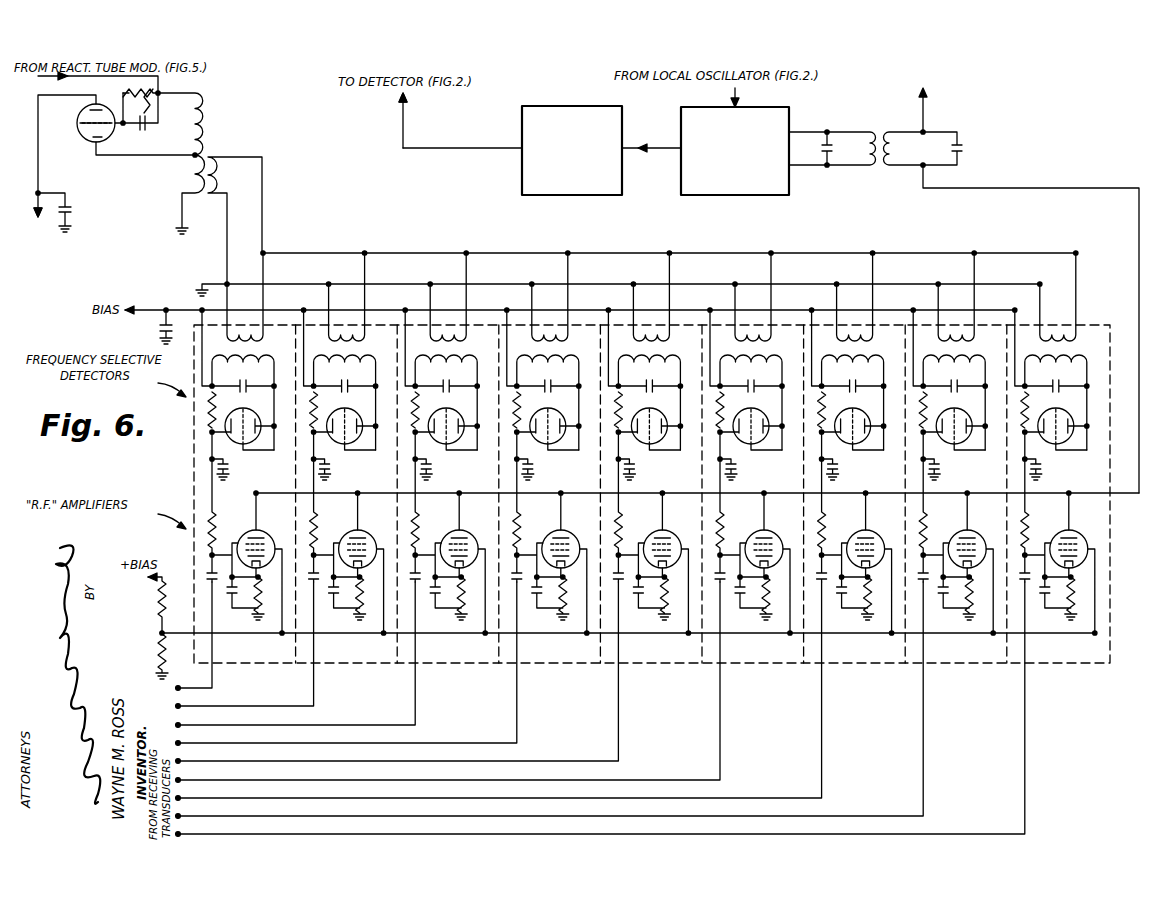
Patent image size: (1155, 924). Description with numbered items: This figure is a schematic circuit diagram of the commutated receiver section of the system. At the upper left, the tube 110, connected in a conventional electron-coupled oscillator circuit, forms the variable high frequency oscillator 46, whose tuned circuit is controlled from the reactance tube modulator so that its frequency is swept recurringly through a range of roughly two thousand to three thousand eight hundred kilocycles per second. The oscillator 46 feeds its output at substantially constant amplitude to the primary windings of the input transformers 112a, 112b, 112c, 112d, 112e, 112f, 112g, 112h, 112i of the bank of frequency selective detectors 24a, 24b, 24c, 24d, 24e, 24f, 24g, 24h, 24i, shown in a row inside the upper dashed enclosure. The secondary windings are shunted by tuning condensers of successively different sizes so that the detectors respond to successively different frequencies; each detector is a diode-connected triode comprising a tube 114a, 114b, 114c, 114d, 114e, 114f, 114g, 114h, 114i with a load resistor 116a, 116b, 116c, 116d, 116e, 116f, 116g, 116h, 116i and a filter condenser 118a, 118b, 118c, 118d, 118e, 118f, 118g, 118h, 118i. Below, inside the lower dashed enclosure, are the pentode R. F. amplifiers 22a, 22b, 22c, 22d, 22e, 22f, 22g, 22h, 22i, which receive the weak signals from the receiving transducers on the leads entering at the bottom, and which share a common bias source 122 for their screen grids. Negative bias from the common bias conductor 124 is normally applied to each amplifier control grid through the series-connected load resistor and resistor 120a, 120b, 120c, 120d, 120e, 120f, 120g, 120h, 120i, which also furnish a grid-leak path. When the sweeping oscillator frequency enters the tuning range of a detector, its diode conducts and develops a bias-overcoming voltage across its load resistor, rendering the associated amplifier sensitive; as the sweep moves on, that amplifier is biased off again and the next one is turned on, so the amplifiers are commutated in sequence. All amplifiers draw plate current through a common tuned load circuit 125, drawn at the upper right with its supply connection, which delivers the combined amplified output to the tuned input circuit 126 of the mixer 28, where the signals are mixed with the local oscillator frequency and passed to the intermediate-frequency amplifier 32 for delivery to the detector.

The tube 110 is at (80, 141).
The variable high frequency oscillator 46 is at (145, 186).
The intermediate-frequency amplifier 32 is at (572, 150).
The mixer 28 is at (735, 151).
The tuned input circuit 126 is at (849, 136).
The coupling coil 125 is at (935, 139).
The common bias conductor 124 is at (150, 306).
The common bias source 122 is at (186, 608).
The input transformer 112a is at (268, 340).
The input transformer 112b is at (357, 350).
The input transformer 112c is at (459, 350).
The input transformer 112d is at (562, 350).
The input transformer 112e is at (662, 350).
The input transformer 112f is at (764, 350).
The input transformer 112g is at (865, 350).
The input transformer 112h is at (967, 350).
The input transformer 112i is at (1067, 350).
The load resistor 116a is at (214, 402).
The load resistor 116b is at (344, 396).
The load resistor 116c is at (445, 396).
The load resistor 116d is at (547, 396).
The load resistor 116e is at (648, 396).
The load resistor 116f is at (750, 396).
The load resistor 116g is at (852, 396).
The load resistor 116h is at (953, 396).
The load resistor 116i is at (1055, 396).
The tube 114a is at (244, 411).
The tube 114b is at (345, 425).
The tube 114c is at (447, 425).
The tube 114d is at (550, 425).
The tube 114e is at (650, 425).
The tube 114f is at (752, 425).
The tube 114g is at (853, 425).
The tube 114h is at (955, 425).
The tube 114i is at (1056, 425).
The frequency selective detector 24a is at (236, 450).
The frequency selective detector 24b is at (358, 458).
The frequency selective detector 24c is at (458, 458).
The frequency selective detector 24d is at (561, 458).
The frequency selective detector 24e is at (662, 458).
The frequency selective detector 24f is at (763, 458).
The frequency selective detector 24g is at (866, 458).
The frequency selective detector 24h is at (967, 458).
The frequency selective detector 24i is at (1068, 458).
The filter condenser 118a is at (231, 477).
The filter condenser 118b is at (341, 474).
The filter condenser 118c is at (443, 474).
The filter condenser 118d is at (546, 474).
The filter condenser 118e is at (646, 474).
The filter condenser 118f is at (748, 474).
The filter condenser 118g is at (849, 474).
The filter condenser 118h is at (951, 474).
The filter condenser 118i is at (1051, 474).
The resistor 120a is at (216, 536).
The resistor 120b is at (331, 520).
The resistor 120c is at (431, 520).
The resistor 120d is at (534, 520).
The resistor 120e is at (635, 520).
The resistor 120f is at (736, 520).
The resistor 120g is at (839, 520).
The resistor 120h is at (940, 520).
The resistor 120i is at (1040, 520).
The R. F. amplifier 22a is at (270, 537).
The R. F. amplifier 22b is at (351, 563).
The R. F. amplifier 22c is at (452, 563).
The R. F. amplifier 22d is at (555, 563).
The R. F. amplifier 22e is at (655, 563).
The R. F. amplifier 22f is at (757, 563).
The R. F. amplifier 22g is at (859, 563).
The R. F. amplifier 22h is at (960, 563).
The R. F. amplifier 22i is at (1061, 563).